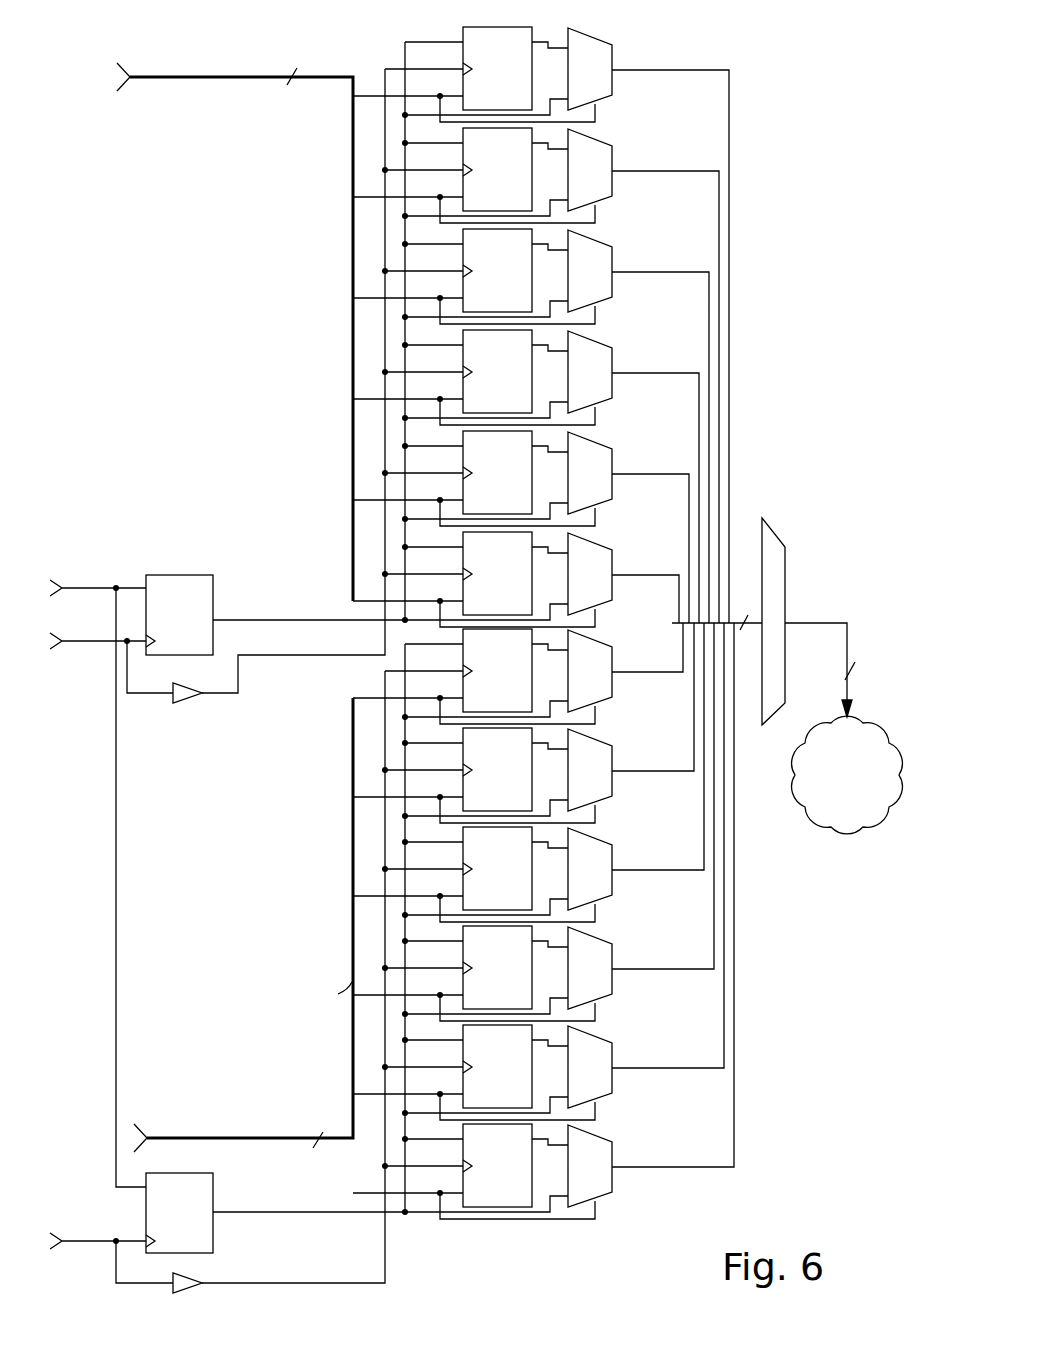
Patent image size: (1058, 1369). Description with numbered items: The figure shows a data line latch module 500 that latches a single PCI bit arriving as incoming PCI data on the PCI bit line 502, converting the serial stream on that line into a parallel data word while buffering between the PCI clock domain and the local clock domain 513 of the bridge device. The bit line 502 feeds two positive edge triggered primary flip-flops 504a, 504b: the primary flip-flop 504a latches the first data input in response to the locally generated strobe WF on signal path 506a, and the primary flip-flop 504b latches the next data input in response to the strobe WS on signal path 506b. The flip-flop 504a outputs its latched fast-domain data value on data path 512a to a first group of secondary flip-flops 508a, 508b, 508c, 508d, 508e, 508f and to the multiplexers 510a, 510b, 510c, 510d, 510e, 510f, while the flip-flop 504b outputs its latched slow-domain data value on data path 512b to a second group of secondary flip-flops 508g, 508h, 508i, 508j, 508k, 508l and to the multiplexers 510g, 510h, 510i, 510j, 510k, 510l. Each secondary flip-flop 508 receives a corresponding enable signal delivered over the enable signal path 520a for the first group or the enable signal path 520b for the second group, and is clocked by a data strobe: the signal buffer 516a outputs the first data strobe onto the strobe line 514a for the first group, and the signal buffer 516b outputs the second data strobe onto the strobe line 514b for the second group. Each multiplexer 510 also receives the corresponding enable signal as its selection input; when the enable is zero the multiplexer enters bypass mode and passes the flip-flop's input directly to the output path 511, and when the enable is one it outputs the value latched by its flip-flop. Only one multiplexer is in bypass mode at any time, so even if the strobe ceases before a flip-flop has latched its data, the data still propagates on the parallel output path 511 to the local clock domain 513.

The data line latch module 500 is at (150, 200).
The PCI bit line 502 is at (128, 583).
The primary flip-flop 504a is at (187, 575).
The primary flip-flop 504b is at (183, 1173).
The signal path 506a is at (93, 609).
The signal path 506b is at (89, 1237).
The secondary flip-flops 508 is at (505, 1242).
The secondary flip-flop 508a is at (535, 27).
The secondary flip-flop 508b is at (535, 130).
The secondary flip-flop 508c is at (535, 231).
The secondary flip-flop 508d is at (535, 332).
The secondary flip-flop 508e is at (535, 433).
The secondary flip-flop 508f is at (535, 534).
The secondary flip-flop 508g is at (535, 631).
The secondary flip-flop 508h is at (535, 730).
The secondary flip-flop 508i is at (535, 829).
The secondary flip-flop 508j is at (535, 928).
The secondary flip-flop 508k is at (535, 1027).
The secondary flip-flop 508l is at (535, 1126).
The multiplexers 510 is at (602, 1242).
The multiplexer 510a is at (612, 79).
The multiplexer 510b is at (612, 180).
The multiplexer 510c is at (612, 281).
The multiplexer 510d is at (612, 382).
The multiplexer 510e is at (612, 483).
The multiplexer 510f is at (612, 584).
The multiplexer 510g is at (612, 681).
The multiplexer 510h is at (612, 780).
The multiplexer 510i is at (612, 879).
The multiplexer 510j is at (612, 978).
The multiplexer 510k is at (612, 1077).
The multiplexer 510l is at (612, 1176).
The output path 511 is at (775, 538).
The data path 512a is at (235, 617).
The data path 512b is at (238, 1214).
The local clock domain 513 is at (837, 829).
The strobe signal path 514a is at (263, 656).
The strobe signal path 514b is at (387, 1262).
The signal buffer 516a is at (173, 701).
The signal buffer 516b is at (173, 1287).
The enable signal path 520a is at (327, 80).
The enable signal path 520b is at (340, 1133).